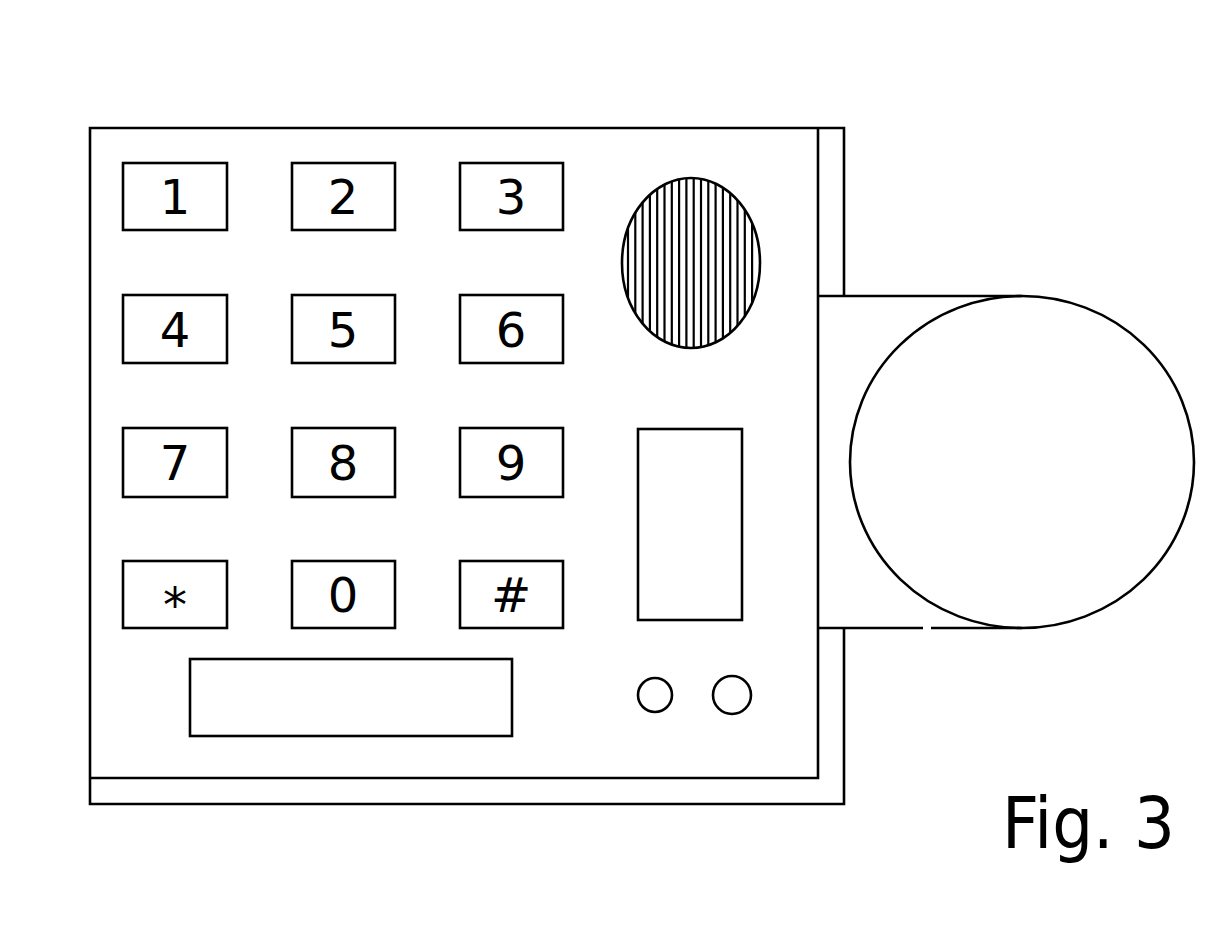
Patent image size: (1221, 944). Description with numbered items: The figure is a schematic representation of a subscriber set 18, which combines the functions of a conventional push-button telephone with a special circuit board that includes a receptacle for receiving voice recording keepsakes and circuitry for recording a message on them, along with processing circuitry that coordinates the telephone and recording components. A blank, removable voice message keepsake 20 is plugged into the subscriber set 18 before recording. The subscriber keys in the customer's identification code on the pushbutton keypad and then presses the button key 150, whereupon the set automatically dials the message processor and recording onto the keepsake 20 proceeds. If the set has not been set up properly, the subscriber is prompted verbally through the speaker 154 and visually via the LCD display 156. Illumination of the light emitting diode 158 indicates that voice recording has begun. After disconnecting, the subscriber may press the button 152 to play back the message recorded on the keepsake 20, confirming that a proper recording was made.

The subscriber set 18 is at (852, 76).
The voice message keepsake 20 is at (1135, 353).
The button key 150 is at (708, 445).
The button 152 is at (654, 690).
The speaker 154 is at (716, 183).
The LCD display 156 is at (335, 710).
The light emitting diode 158 is at (732, 696).